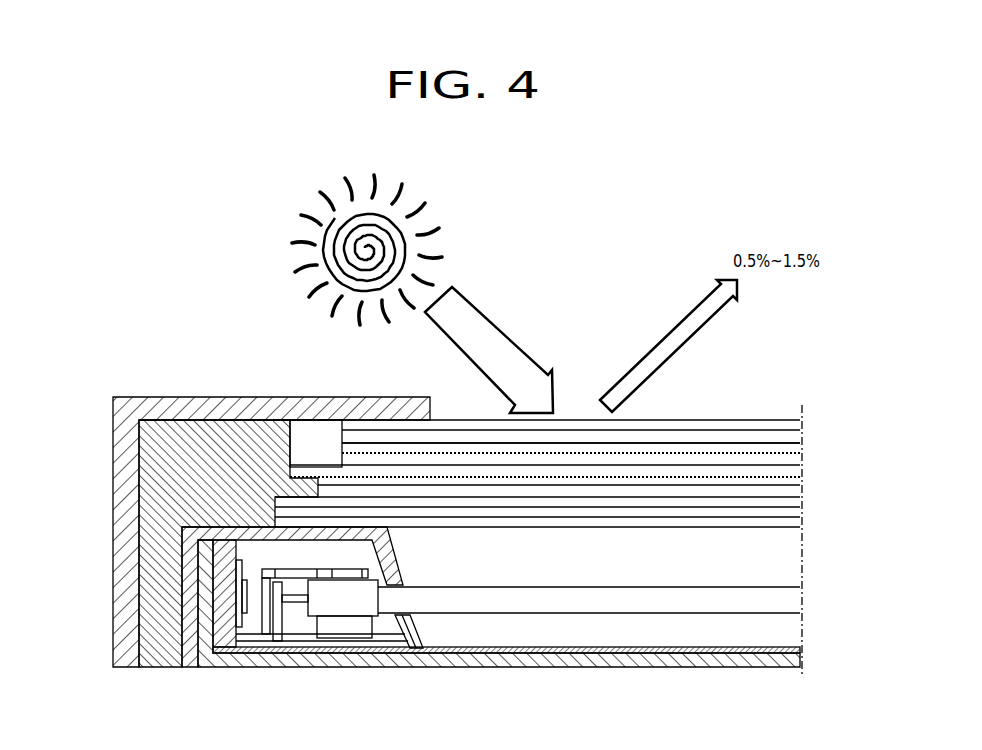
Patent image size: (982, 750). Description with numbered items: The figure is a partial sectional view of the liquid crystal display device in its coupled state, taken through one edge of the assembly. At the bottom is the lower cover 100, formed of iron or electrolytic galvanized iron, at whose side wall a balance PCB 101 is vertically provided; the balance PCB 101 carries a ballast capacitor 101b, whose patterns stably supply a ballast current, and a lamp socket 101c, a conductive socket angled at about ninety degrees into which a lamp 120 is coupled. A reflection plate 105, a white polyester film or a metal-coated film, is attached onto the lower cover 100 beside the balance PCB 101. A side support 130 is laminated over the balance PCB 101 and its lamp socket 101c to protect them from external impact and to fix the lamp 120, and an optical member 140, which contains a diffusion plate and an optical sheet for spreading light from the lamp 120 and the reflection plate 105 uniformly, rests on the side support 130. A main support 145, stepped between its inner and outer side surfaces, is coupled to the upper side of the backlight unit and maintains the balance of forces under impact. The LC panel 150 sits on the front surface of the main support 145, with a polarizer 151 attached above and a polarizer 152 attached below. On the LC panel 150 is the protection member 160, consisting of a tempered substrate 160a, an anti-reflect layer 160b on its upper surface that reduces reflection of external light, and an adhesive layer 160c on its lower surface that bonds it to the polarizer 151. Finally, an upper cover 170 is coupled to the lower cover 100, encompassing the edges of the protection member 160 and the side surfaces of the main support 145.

The lower cover 100 is at (800, 658).
The balance PCB 101 is at (218, 626).
The ballast capacitor 101b is at (245, 632).
The lamp socket 101c is at (341, 638).
The reflection plate 105 is at (800, 650).
The lamp 120 is at (790, 600).
The side support 130 is at (188, 587).
The optical member 140 is at (810, 495).
The main support 145 is at (153, 501).
The LC panel 150 is at (800, 469).
The polarizer 151 is at (800, 452).
The polarizer 152 is at (800, 478).
The protection member 160 is at (803, 360).
The tempered substrate 160a is at (743, 435).
The anti-reflect layer 160b is at (693, 427).
The adhesive layer 160c is at (789, 445).
The upper cover 170 is at (125, 548).